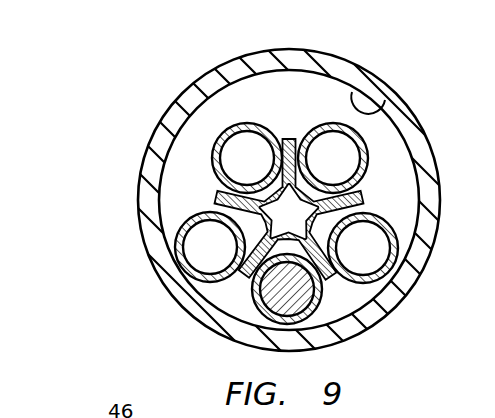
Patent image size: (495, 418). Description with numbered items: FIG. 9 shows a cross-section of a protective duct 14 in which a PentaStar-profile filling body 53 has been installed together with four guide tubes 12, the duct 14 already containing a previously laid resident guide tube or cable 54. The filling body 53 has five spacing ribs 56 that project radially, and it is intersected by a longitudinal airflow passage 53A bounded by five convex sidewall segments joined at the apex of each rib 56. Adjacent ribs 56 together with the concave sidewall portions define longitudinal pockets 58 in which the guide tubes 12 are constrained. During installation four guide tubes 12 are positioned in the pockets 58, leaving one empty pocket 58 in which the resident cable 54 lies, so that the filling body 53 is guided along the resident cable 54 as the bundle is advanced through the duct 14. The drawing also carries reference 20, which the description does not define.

The guide tube 12 is at (222, 133).
The protective duct 14 is at (373, 73).
The ripcord 20 is at (398, 97).
The filling body 53 is at (290, 132).
The longitudinal airflow passage 53A is at (328, 247).
The resident guide tube or cable 54 is at (347, 323).
The spacing rib 56 is at (215, 197).
The longitudinal pocket 58 is at (195, 203).